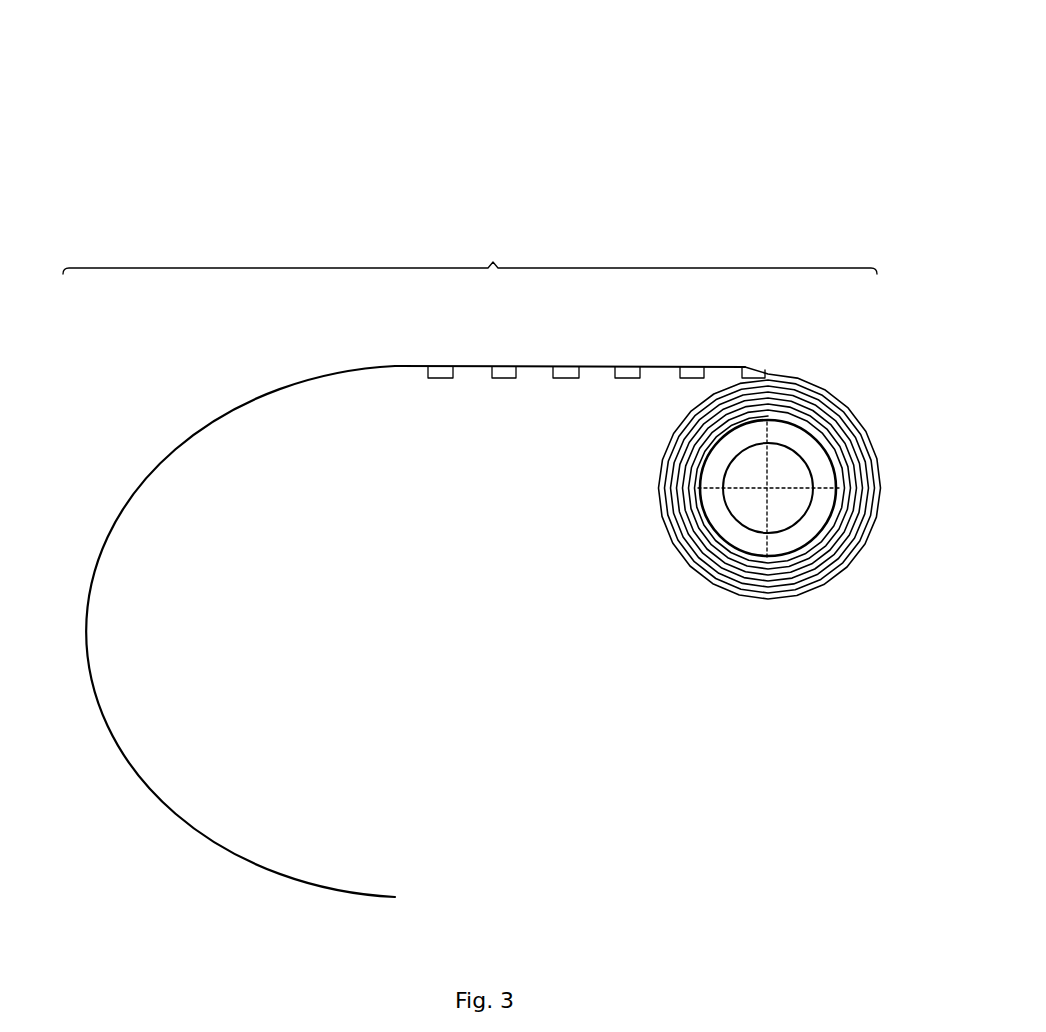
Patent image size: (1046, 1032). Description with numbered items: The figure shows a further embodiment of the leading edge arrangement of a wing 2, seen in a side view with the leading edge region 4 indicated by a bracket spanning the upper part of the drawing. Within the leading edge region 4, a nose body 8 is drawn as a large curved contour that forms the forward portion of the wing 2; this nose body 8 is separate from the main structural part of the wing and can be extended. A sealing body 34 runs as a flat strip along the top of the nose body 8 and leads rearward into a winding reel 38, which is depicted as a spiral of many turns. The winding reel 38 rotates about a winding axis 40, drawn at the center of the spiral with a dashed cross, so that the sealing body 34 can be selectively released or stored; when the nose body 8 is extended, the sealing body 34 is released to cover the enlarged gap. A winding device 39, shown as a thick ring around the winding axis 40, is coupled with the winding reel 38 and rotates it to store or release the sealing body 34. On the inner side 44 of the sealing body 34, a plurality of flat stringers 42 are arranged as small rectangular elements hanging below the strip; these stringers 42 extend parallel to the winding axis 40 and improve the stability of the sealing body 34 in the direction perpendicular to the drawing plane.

The wing 2 is at (677, 69).
The leading edge region 4 is at (470, 248).
The nose body 8 is at (78, 562).
The sealing body 34 is at (534, 367).
The winding reel 38 is at (802, 435).
The winding device 39 is at (785, 470).
The winding axis 40 is at (768, 488).
The flat stringers 42 is at (503, 377).
The inner side 44 is at (532, 386).